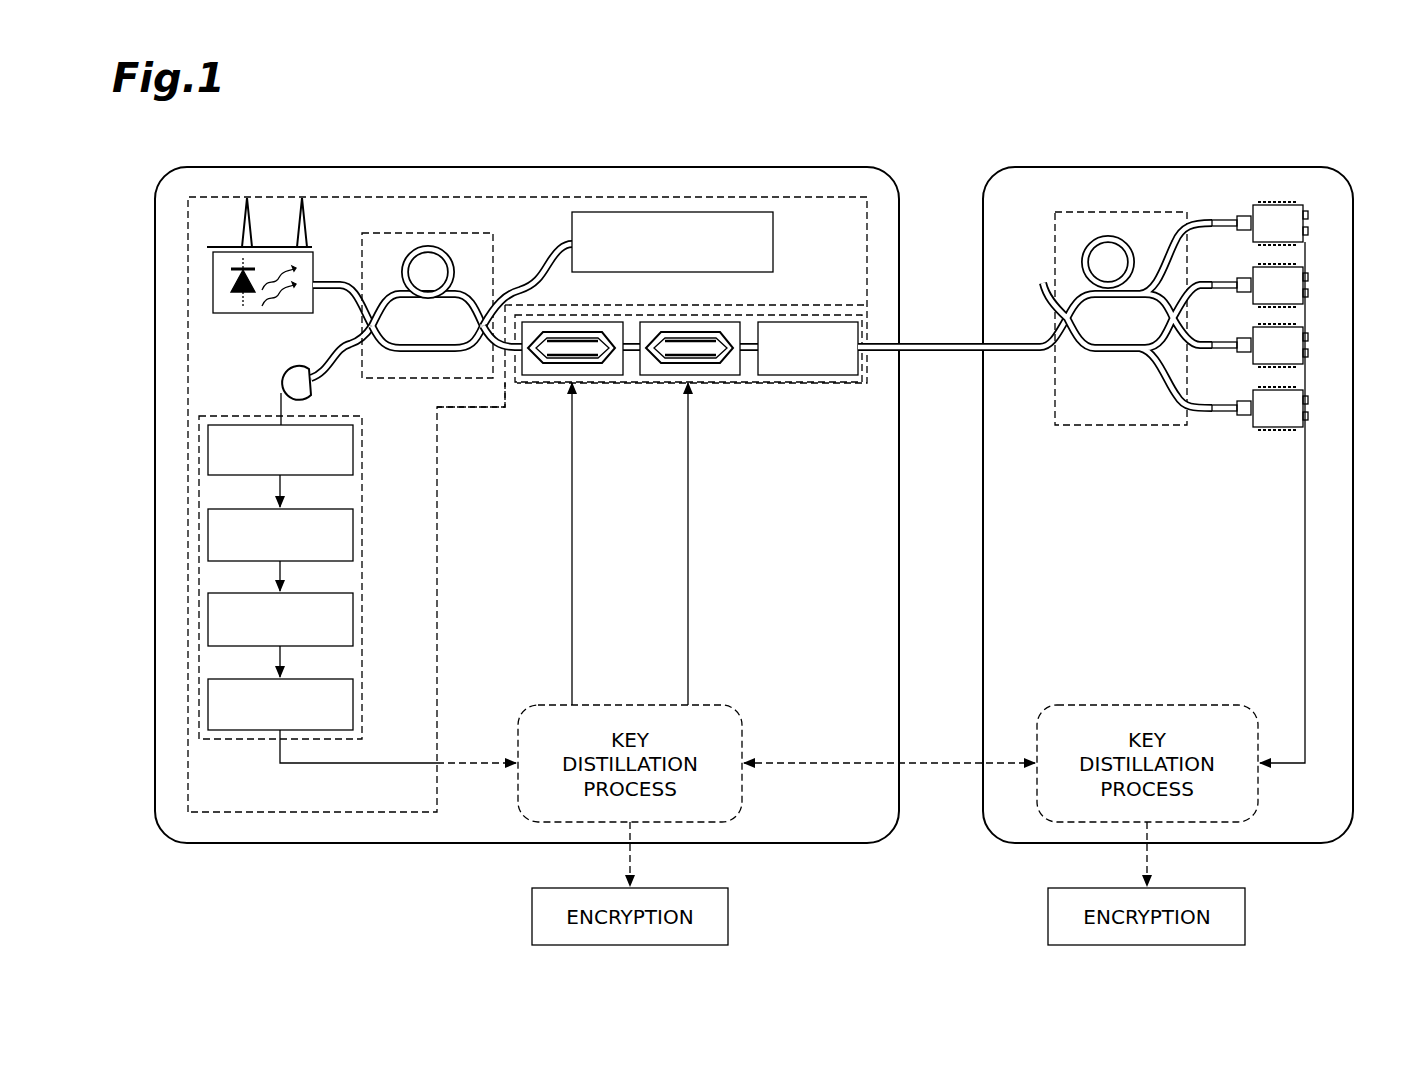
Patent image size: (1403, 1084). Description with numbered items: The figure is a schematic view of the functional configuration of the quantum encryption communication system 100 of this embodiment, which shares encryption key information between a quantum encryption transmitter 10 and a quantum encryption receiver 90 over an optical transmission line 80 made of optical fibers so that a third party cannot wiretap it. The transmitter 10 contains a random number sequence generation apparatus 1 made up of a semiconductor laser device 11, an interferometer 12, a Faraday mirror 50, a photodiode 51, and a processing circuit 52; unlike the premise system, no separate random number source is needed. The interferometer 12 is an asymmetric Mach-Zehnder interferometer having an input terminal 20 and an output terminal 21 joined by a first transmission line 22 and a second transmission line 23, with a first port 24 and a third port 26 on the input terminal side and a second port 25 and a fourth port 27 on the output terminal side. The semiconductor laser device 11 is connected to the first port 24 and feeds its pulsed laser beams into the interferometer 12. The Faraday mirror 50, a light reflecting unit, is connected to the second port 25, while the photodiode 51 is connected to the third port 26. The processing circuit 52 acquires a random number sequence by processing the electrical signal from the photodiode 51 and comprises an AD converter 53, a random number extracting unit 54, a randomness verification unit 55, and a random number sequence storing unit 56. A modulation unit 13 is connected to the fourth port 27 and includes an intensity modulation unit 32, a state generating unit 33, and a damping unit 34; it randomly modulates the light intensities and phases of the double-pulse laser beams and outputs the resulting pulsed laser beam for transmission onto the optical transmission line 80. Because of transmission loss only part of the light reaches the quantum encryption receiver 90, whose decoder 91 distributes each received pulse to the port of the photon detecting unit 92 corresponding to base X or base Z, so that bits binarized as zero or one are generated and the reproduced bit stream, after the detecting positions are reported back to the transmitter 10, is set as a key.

The quantum encryption communication system 100 is at (772, 467).
The quantum encryption transmitter 10 is at (810, 162).
The quantum encryption receiver 90 is at (1170, 162).
The random number sequence generation apparatus 1 is at (440, 497).
The semiconductor laser device 11 is at (232, 313).
The interferometer 12 is at (459, 384).
The modulation unit 13 is at (776, 386).
The input terminal 20 is at (372, 314).
The output terminal 21 is at (483, 314).
The first transmission line 22 is at (426, 248).
The second transmission line 23 is at (412, 353).
The first port 24 is at (332, 281).
The second port 25 is at (507, 290).
The third port 26 is at (358, 347).
The fourth port 27 is at (500, 358).
The intensity modulation unit 32 is at (600, 383).
The state generating unit 33 is at (722, 383).
The damping unit 34 is at (840, 383).
The Faraday mirror 50 is at (773, 228).
The photodiode 51 is at (283, 368).
The processing circuit 52 is at (242, 741).
The AD converter 53 is at (354, 456).
The random number extracting unit 54 is at (354, 533).
The randomness verification unit 55 is at (354, 615).
The random number sequence storing unit 56 is at (354, 698).
The optical transmission line 80 is at (942, 342).
The decoder 91 is at (1148, 427).
The photon detecting unit 92 is at (1256, 456).